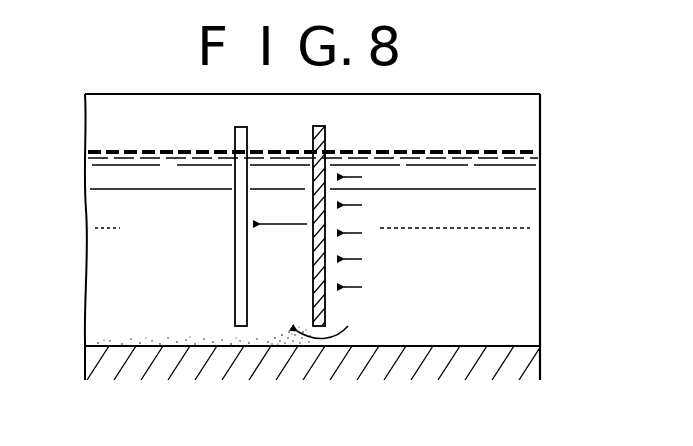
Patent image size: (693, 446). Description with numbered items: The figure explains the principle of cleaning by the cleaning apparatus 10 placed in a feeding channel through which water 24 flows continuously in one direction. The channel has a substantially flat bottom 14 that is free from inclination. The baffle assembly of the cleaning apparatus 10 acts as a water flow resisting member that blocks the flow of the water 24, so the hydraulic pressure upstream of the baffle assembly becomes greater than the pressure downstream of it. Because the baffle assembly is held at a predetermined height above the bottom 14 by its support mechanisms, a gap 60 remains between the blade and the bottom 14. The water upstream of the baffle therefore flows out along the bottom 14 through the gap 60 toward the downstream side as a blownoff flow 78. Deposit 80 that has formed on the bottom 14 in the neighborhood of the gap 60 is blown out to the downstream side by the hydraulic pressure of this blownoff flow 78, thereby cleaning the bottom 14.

The cleaning apparatus 10 is at (243, 141).
The bottom 14 is at (411, 346).
The water 24 is at (505, 152).
The gap 60 is at (312, 345).
The blownoff flow 78 is at (334, 336).
The deposit 80 is at (268, 345).